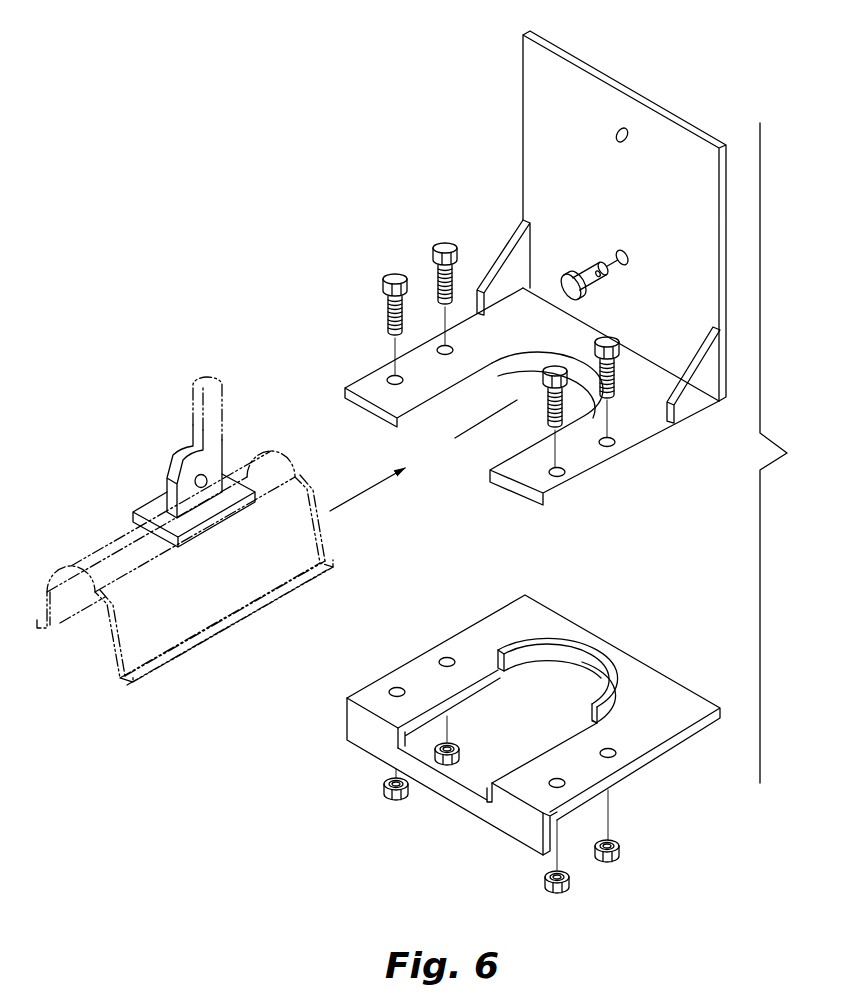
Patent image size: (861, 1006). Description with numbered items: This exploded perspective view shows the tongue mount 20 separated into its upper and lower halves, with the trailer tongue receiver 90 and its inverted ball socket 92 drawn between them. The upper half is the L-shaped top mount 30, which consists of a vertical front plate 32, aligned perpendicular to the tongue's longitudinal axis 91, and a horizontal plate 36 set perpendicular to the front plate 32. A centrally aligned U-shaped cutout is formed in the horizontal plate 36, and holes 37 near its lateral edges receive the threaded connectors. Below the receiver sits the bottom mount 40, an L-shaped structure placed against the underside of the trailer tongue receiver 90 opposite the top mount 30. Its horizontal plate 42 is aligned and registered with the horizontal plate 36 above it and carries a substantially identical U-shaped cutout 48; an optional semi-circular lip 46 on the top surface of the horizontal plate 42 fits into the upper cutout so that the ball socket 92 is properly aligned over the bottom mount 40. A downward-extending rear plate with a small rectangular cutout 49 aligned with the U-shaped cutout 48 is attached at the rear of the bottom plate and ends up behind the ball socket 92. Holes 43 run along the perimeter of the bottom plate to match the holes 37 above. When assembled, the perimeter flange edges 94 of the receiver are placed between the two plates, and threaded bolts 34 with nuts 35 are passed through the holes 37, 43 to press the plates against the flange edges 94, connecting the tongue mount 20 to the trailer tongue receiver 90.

The tongue mount 20 is at (789, 453).
The top mount 30 is at (523, 268).
The vertical front plate 32 is at (552, 93).
The threaded bolts 34 is at (432, 250).
The nuts 35 is at (383, 790).
The horizontal plate 36 is at (383, 364).
The holes 37 is at (386, 380).
The bottom mount 40 is at (518, 385).
The horizontal plate 42 is at (426, 666).
The holes 43 is at (390, 690).
The semi-circular lip 46 is at (609, 677).
The U-shaped cutout 48 is at (373, 727).
The rectangular cutout 49 is at (495, 753).
The trailer tongue receiver 90 is at (156, 487).
The longitudinal axis 91 is at (477, 423).
The ball socket 92 is at (260, 476).
The perimeter flange edges 94 is at (367, 517).